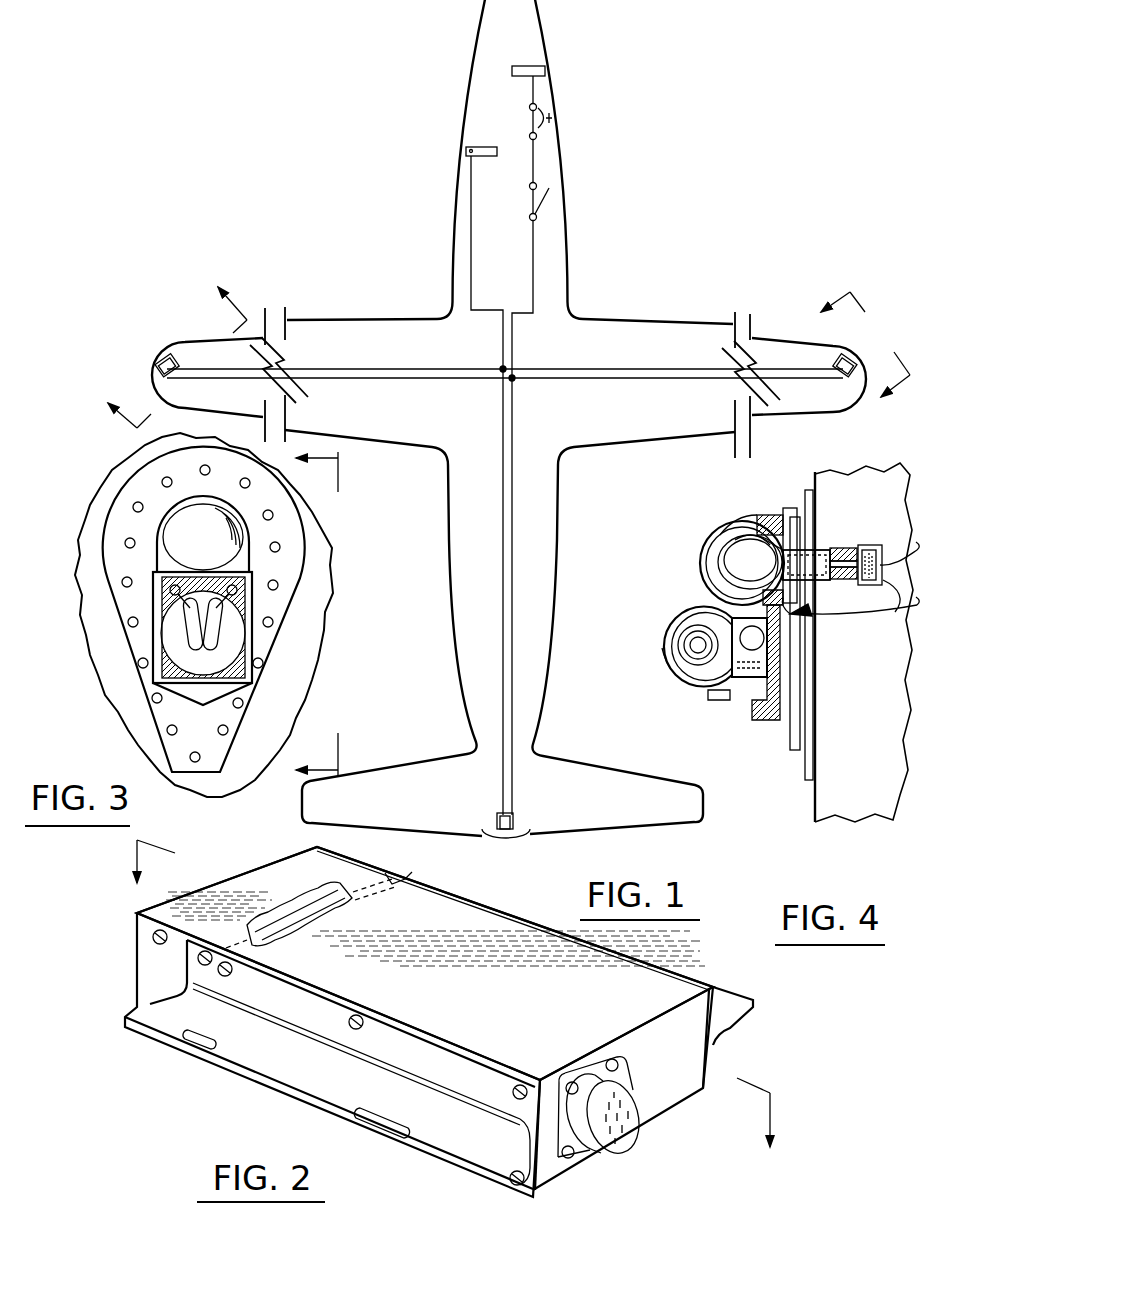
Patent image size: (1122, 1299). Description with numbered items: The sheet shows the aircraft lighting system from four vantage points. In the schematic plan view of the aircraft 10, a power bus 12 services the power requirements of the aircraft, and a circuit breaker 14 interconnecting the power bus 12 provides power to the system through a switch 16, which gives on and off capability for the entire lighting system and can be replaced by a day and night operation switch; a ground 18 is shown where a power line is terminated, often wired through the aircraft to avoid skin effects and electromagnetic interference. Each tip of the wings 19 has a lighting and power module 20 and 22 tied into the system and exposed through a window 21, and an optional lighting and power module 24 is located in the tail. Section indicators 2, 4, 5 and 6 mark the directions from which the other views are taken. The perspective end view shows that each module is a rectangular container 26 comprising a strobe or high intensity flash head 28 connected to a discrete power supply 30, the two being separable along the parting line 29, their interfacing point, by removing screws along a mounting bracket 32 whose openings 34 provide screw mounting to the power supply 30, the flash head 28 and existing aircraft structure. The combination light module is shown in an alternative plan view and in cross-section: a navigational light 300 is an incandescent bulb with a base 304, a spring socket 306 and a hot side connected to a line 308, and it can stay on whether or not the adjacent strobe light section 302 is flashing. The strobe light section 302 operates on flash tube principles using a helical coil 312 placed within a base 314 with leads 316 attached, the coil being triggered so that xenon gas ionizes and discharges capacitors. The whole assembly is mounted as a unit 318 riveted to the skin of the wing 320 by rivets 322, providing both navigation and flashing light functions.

In FIG. 1, the section line 2— 2 is at (167, 345).
In FIG. 1, the section line 4— 4 is at (337, 614).
In FIG. 2, the section line 5- 5 is at (448, 1007).
In FIG. 1, the section line 6- 6 is at (851, 358).
In FIG. 1, the aircraft 10 is at (648, 244).
In FIG. 1, the power bus 12 is at (523, 66).
In FIG. 1, the circuit breaker 14 is at (542, 98).
In FIG. 1, the switch 16 is at (542, 180).
In FIG. 1, the ground 18 is at (483, 147).
In FIG. 1, the wings 19 is at (390, 316).
In FIG. 1, the lighting and power module 20 is at (170, 360).
In FIG. 1, the window 21 is at (158, 358).
In FIG. 1, the lighting and power module 22 is at (832, 364).
In FIG. 1, the lighting and power module 24 is at (516, 824).
In FIG. 2, the rectangular container 26 is at (496, 891).
In FIG. 2, the flash head 28 is at (258, 885).
In FIG. 2, the parting line 29 is at (433, 884).
In FIG. 2, the power supply 30 is at (563, 1000).
In FIG. 2, the mounting bracket 32 is at (382, 1140).
In FIG. 2, the openings 34 is at (215, 1038).
In FIG. 3, the navigational light 300 is at (217, 543).
In FIG. 4, the navigational light 300 is at (745, 548).
In FIG. 3, the strobe light section 302 is at (243, 645).
In FIG. 4, the strobe light section 302 is at (695, 615).
In FIG. 4, the base 304 is at (826, 548).
In FIG. 4, the spring socket 306 is at (871, 546).
In FIG. 4, the line 308 is at (884, 612).
In FIG. 3, the helical coil 312 is at (192, 628).
In FIG. 4, the helical coil 312 is at (668, 668).
In FIG. 4, the base 314 is at (745, 665).
In FIG. 4, the leads 316 is at (834, 625).
In FIG. 3, the unit 318 is at (276, 690).
In FIG. 3, the wing 320 is at (118, 478).
In FIG. 3, the rivets 322 is at (125, 543).